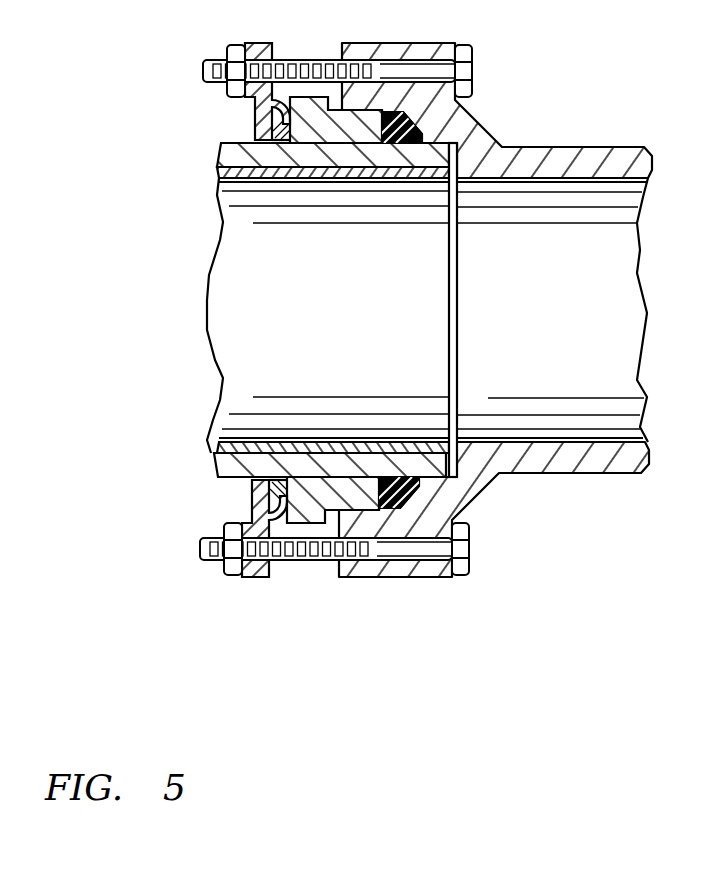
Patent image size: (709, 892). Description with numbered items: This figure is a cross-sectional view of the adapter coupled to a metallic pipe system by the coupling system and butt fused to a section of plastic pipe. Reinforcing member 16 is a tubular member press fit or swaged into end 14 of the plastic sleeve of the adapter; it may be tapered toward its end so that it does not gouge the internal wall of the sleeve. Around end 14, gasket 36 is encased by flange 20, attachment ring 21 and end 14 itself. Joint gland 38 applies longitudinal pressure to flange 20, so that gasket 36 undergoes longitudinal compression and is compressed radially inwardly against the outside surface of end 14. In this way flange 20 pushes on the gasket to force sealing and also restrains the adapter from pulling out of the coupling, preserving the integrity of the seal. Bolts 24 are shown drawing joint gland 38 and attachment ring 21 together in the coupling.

The end of the plastic sleeve 14 is at (221, 153).
The reinforcing member 16 is at (338, 315).
The flange 20 is at (257, 137).
The attachment ring 21 is at (478, 125).
The bolt 24 is at (477, 62).
The gasket 36 is at (407, 497).
The joint gland 38 is at (256, 126).